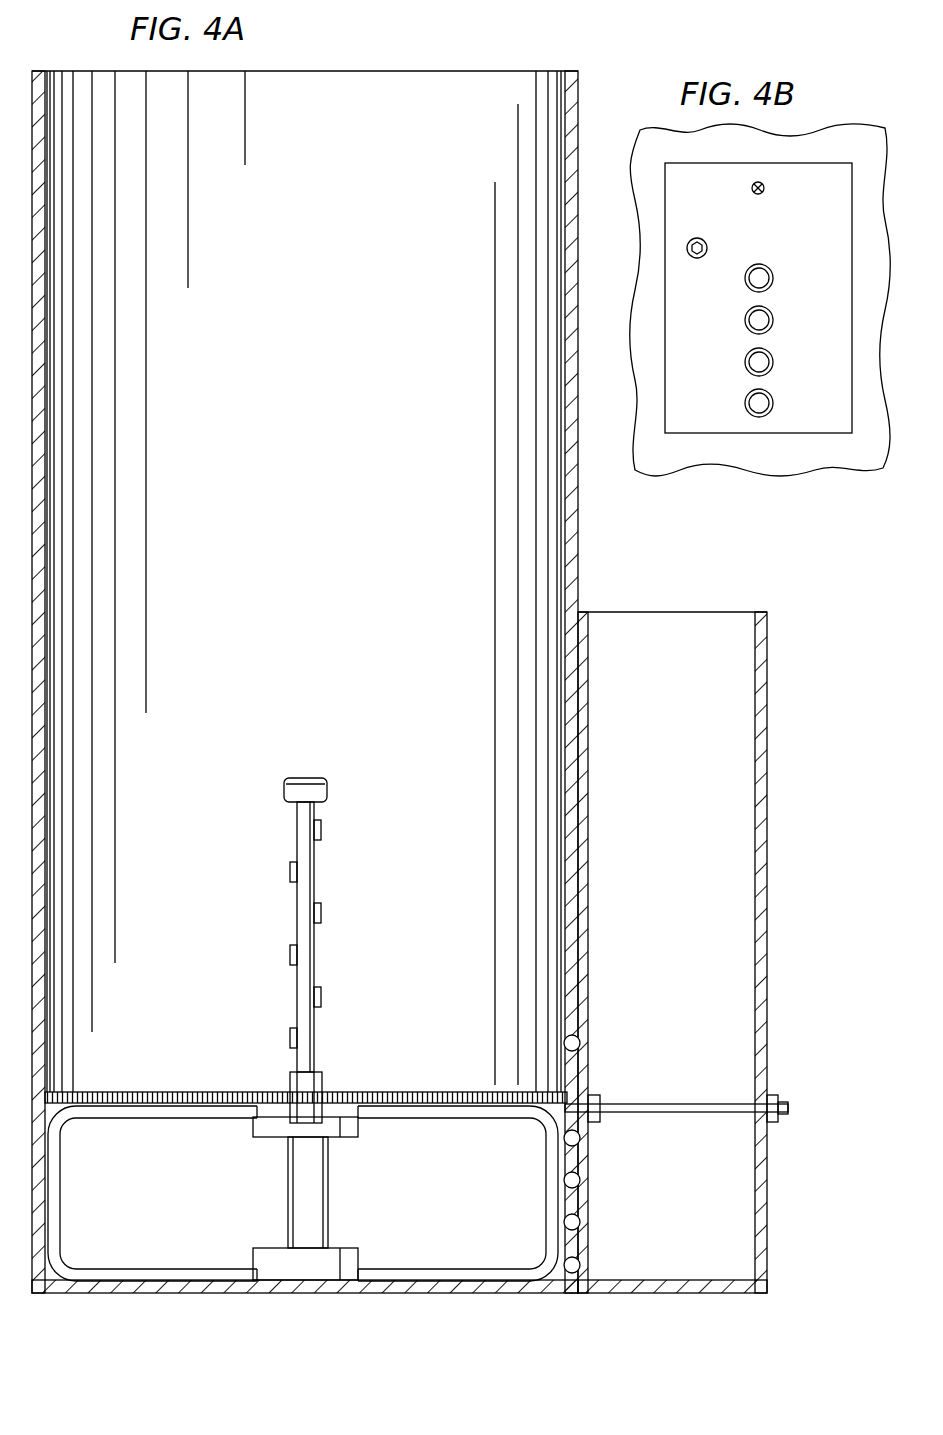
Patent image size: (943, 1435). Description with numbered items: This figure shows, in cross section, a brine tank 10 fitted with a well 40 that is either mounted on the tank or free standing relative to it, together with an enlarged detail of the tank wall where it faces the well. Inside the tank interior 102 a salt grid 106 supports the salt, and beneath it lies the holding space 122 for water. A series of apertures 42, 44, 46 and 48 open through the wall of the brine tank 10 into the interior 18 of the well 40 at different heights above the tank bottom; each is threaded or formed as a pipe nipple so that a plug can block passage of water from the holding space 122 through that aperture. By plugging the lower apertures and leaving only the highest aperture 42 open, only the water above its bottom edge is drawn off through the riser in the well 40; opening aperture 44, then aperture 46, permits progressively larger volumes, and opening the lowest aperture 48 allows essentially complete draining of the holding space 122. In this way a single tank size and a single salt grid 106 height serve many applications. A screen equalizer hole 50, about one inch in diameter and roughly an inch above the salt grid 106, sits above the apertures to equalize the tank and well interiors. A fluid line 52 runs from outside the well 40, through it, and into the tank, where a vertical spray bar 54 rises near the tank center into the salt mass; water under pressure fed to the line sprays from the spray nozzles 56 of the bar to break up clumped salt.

In FIG. 4A, the brine tank 10 is at (522, 51).
In FIG. 4A, the interior of the well 18 is at (658, 810).
In FIG. 4A, the well 40 is at (686, 598).
In FIG. 4A, the aperture 42 is at (586, 1135).
In FIG. 4B, the aperture 42 is at (774, 278).
In FIG. 4A, the aperture 44 is at (586, 1177).
In FIG. 4B, the aperture 44 is at (745, 320).
In FIG. 4A, the aperture 46 is at (586, 1219).
In FIG. 4B, the aperture 46 is at (745, 362).
In FIG. 4A, the aperture 48 is at (586, 1262).
In FIG. 4B, the aperture 48 is at (745, 403).
In FIG. 4A, the screen equalizer hole 50 is at (586, 1040).
In FIG. 4B, the screen equalizer hole 50 is at (766, 188).
In FIG. 4A, the fluid line 52 is at (682, 1104).
In FIG. 4A, the vertical spray bar 54 is at (315, 876).
In FIG. 4A, the spray nozzles 56 is at (322, 832).
In FIG. 4A, the tank interior 102 is at (250, 509).
In FIG. 4A, the salt grid 106 is at (147, 1092).
In FIG. 4A, the holding space 122 is at (130, 1199).